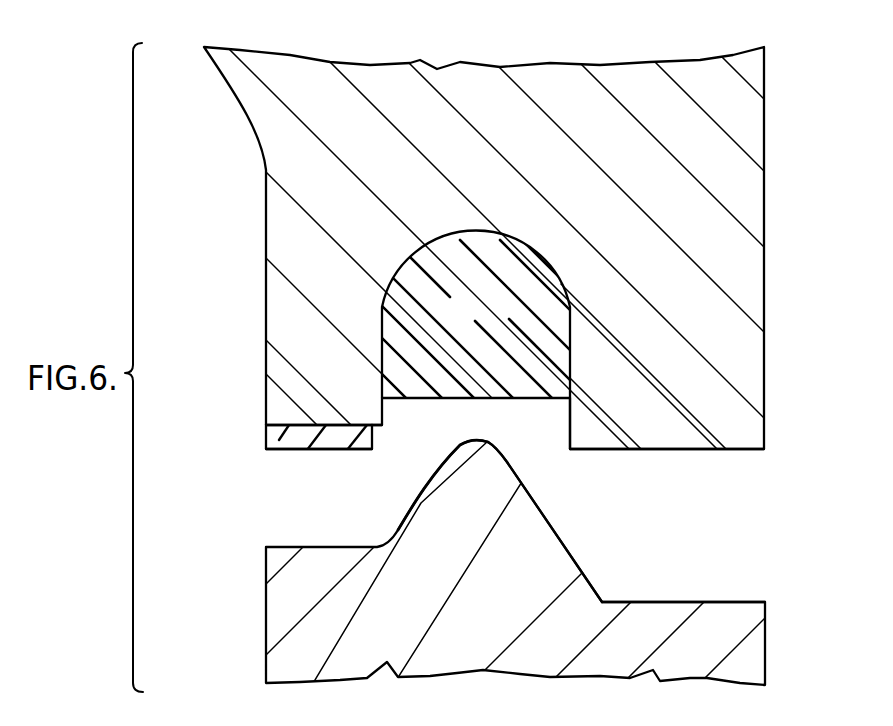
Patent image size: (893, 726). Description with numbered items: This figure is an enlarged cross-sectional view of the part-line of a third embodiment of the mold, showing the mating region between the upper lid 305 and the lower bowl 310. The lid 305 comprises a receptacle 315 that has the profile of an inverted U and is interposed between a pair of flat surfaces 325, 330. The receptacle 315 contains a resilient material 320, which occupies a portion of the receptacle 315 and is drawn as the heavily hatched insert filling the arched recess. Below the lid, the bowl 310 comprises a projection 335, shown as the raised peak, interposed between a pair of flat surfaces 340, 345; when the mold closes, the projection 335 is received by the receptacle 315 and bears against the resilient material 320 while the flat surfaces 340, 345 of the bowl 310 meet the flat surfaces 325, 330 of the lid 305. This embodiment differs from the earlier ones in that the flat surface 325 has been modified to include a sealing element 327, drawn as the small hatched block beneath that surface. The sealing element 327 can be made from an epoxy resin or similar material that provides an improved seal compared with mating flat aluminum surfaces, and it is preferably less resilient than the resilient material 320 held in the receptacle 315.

The lid 305 is at (613, 88).
The bowl 310 is at (765, 631).
The receptacle 315 is at (570, 410).
The resilient material 320 is at (498, 316).
The flat surface 325 is at (280, 430).
The sealing element 327 is at (281, 436).
The flat surface 330 is at (693, 450).
The projection 335 is at (522, 488).
The flat surface 340 is at (302, 449).
The flat surface 345 is at (660, 602).